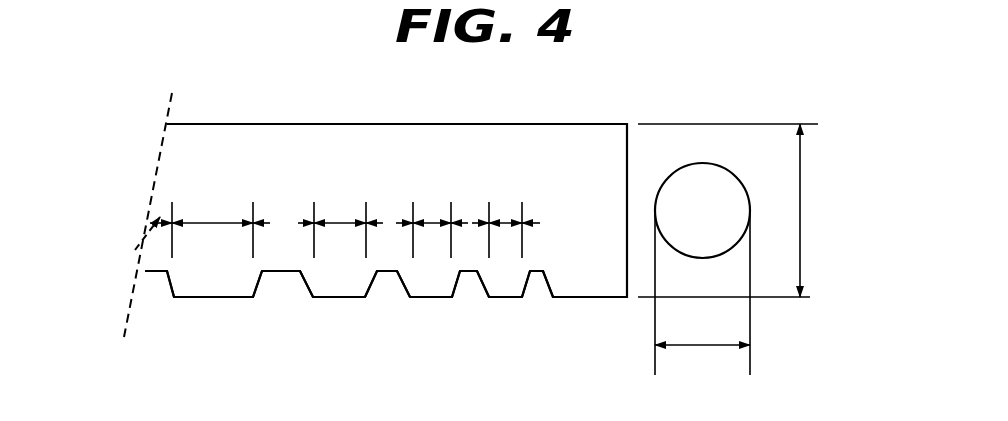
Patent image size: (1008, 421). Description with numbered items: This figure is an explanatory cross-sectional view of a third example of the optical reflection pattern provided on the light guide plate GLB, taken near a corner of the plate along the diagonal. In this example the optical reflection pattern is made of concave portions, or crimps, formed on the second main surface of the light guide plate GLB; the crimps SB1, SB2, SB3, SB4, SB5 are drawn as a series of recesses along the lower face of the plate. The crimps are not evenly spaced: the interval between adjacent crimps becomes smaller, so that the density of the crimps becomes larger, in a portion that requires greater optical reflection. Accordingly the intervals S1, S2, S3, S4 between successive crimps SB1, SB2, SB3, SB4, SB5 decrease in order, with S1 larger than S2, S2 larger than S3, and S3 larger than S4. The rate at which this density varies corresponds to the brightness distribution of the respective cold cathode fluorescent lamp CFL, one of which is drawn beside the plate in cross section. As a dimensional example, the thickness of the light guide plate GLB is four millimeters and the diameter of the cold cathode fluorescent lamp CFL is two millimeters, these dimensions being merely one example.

The light guide plate GLB is at (578, 132).
The cold cathode fluorescent lamp CFL is at (708, 172).
The crimp SB1 is at (535, 287).
The crimp SB2 is at (468, 287).
The crimp SB3 is at (387, 287).
The crimp SB4 is at (282, 287).
The crimp SB5 is at (153, 287).
The interval between adjacent crimps S1 is at (506, 200).
The interval between adjacent crimps S2 is at (432, 200).
The interval between adjacent crimps S3 is at (340, 200).
The interval between adjacent crimps S4 is at (210, 200).